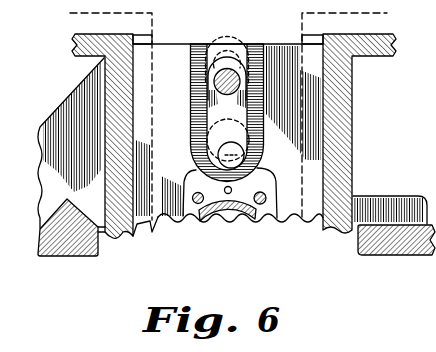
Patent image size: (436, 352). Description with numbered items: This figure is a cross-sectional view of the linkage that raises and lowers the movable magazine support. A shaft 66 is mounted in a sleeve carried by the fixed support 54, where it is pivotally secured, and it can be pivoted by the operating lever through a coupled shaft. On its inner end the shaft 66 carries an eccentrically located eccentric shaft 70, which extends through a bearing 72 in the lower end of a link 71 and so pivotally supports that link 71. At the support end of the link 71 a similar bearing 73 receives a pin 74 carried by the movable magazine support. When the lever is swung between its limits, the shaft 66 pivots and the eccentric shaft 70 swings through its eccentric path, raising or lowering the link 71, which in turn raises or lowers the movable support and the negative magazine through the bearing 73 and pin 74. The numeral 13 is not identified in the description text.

The adjacent figure fragment 13 is at (426, 115).
The fixed support 54 is at (176, 221).
The shaft 66 is at (194, 148).
The eccentric shaft 70 is at (228, 160).
The link 71 is at (250, 85).
The bearing 72 is at (275, 219).
The bearing 73 is at (226, 68).
The pin 74 is at (216, 77).